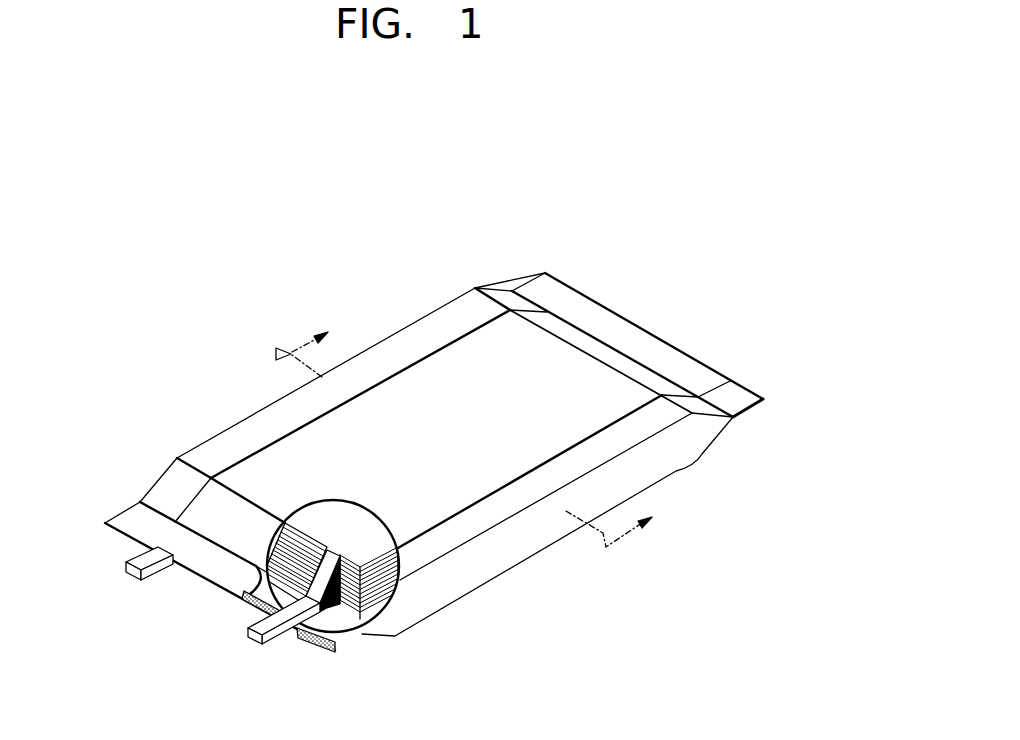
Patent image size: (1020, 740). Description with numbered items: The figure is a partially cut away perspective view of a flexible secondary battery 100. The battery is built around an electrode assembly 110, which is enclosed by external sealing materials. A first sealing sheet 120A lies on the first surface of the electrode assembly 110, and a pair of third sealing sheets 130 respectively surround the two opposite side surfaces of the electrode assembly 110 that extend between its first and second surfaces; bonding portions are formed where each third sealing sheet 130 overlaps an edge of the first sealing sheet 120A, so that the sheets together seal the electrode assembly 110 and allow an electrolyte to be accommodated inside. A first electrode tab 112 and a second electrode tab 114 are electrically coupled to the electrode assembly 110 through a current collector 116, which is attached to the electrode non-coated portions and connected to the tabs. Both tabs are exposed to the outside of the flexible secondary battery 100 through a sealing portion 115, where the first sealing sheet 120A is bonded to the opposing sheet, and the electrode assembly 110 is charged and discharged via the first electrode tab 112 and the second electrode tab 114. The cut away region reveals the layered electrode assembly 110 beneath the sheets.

The flexible secondary battery 100 is at (210, 289).
The electrode assembly 110 is at (355, 533).
The first electrode tab 112 is at (132, 580).
The second electrode tab 114 is at (258, 646).
The sealing portion 115 is at (243, 604).
The current collector 116 is at (352, 638).
The first sealing sheet 120A is at (593, 373).
The third sealing sheets 130 is at (433, 332).